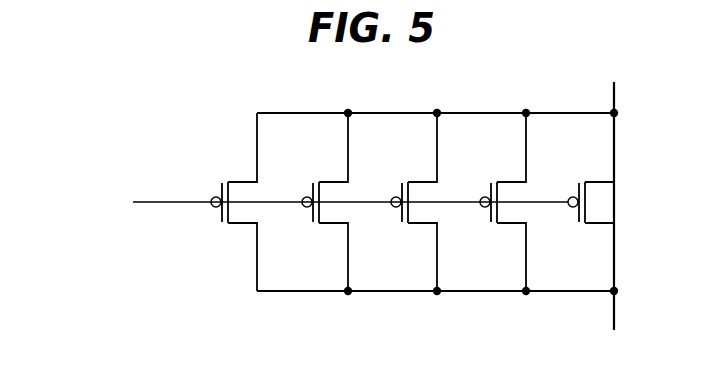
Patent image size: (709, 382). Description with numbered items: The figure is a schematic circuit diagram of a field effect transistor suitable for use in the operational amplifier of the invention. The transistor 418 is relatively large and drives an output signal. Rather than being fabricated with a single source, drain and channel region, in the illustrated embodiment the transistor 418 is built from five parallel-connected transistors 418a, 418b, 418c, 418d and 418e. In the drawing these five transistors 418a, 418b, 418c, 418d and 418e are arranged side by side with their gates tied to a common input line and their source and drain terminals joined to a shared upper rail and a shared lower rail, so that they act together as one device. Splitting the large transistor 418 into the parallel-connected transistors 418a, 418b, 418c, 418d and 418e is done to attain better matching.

The transistor 418 is at (231, 93).
The parallel-connected transistor 418a is at (247, 180).
The parallel-connected transistor 418b is at (338, 180).
The parallel-connected transistor 418c is at (427, 180).
The parallel-connected transistor 418d is at (516, 180).
The parallel-connected transistor 418e is at (604, 180).